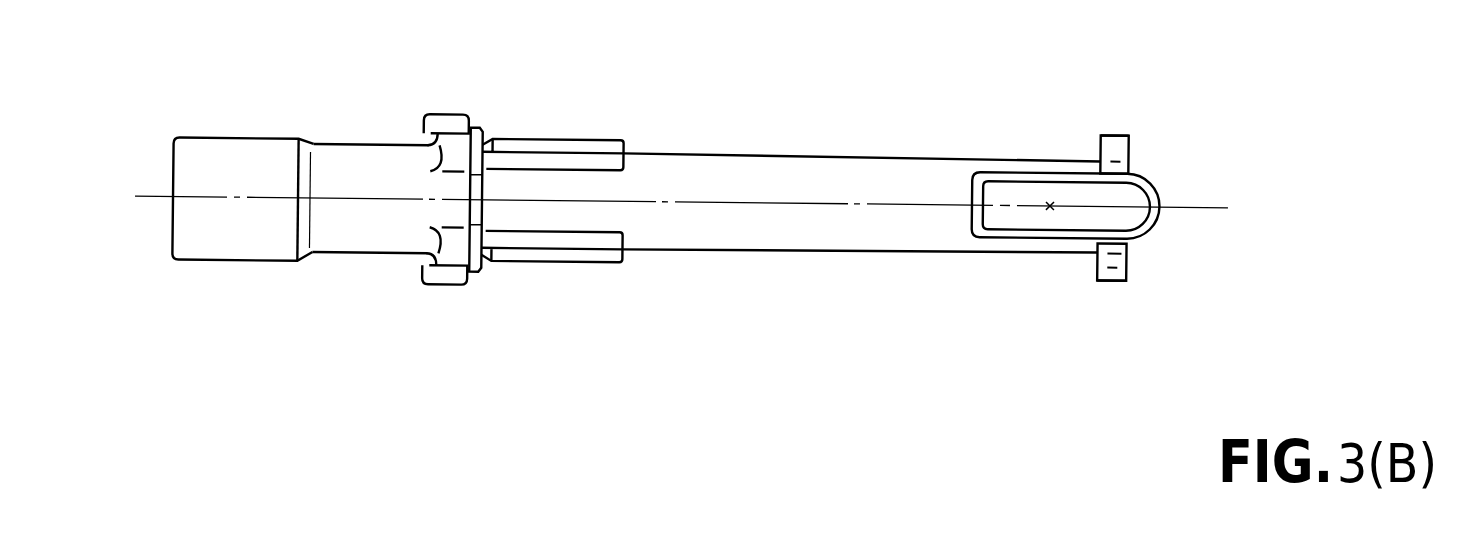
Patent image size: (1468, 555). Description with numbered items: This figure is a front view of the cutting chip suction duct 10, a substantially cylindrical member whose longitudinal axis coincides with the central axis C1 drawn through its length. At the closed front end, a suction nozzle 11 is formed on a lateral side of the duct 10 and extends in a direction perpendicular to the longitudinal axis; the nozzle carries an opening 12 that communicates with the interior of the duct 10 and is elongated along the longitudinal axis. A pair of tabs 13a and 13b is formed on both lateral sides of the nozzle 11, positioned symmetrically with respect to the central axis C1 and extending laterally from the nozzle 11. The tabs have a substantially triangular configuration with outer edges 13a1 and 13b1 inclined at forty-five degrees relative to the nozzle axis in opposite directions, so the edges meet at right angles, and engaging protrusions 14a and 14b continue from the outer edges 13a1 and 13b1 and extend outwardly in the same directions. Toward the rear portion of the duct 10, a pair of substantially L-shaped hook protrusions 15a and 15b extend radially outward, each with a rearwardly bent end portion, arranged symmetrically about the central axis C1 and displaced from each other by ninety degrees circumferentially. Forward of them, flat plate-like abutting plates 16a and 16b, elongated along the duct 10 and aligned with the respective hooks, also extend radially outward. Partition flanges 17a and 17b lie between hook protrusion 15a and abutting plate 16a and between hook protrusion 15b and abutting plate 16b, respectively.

The cutting chip suction duct 10 is at (727, 151).
The central axis C1 is at (765, 205).
The suction nozzle 11 is at (1030, 173).
The opening 12 is at (1051, 203).
The tab 13a is at (1130, 157).
The tab 13b is at (1130, 262).
The outer edge 13a1 is at (1122, 152).
The outer edge 13b1 is at (1110, 268).
The engaging protrusion 14a is at (1115, 134).
The engaging protrusion 14b is at (1113, 281).
The hook protrusion 15a is at (455, 138).
The hook protrusion 15b is at (455, 258).
The abutting plate 16a is at (533, 141).
The abutting plate 16b is at (518, 259).
The partition flange 17a is at (476, 130).
The partition flange 17b is at (471, 264).